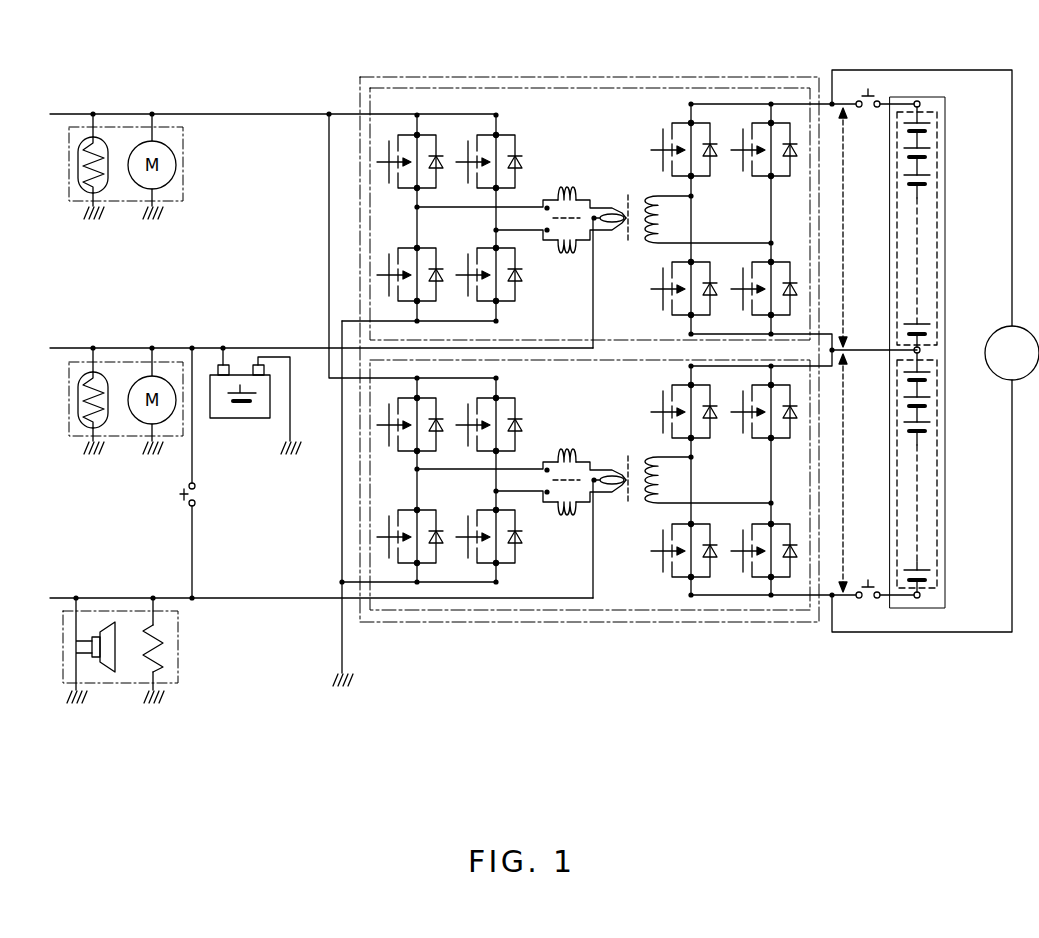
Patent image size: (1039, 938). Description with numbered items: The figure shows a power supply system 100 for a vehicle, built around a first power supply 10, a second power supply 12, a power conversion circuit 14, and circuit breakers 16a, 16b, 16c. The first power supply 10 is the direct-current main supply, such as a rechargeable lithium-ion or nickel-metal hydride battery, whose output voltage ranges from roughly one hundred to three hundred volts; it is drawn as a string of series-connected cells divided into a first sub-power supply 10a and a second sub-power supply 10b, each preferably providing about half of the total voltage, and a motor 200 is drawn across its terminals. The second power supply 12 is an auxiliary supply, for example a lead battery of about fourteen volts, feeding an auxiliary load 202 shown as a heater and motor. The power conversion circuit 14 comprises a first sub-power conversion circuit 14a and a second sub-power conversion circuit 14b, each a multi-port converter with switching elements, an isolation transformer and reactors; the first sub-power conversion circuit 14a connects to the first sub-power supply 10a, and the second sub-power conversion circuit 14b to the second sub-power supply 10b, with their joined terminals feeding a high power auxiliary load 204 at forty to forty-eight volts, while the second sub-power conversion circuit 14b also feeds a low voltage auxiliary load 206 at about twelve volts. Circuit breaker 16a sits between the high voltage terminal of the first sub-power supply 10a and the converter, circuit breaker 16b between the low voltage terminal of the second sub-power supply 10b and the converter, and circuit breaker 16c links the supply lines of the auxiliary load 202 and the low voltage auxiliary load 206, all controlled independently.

The power supply system 100 is at (528, 418).
The first power supply 10 is at (944, 352).
The first sub-power supply 10a is at (937, 147).
The second sub-power supply 10b is at (937, 447).
The second power supply 12 is at (250, 418).
The power conversion circuit 14 is at (720, 78).
The first sub-power conversion circuit 14a is at (425, 93).
The second sub-power conversion circuit 14b is at (425, 610).
The circuit breaker 16a is at (866, 110).
The circuit breaker 16b is at (869, 578).
The circuit breaker 16c is at (200, 494).
The traction motor 200 is at (1000, 332).
The auxiliary load 202 is at (68, 395).
The high power auxiliary load 204 is at (68, 160).
The low voltage auxiliary load 206 is at (63, 642).